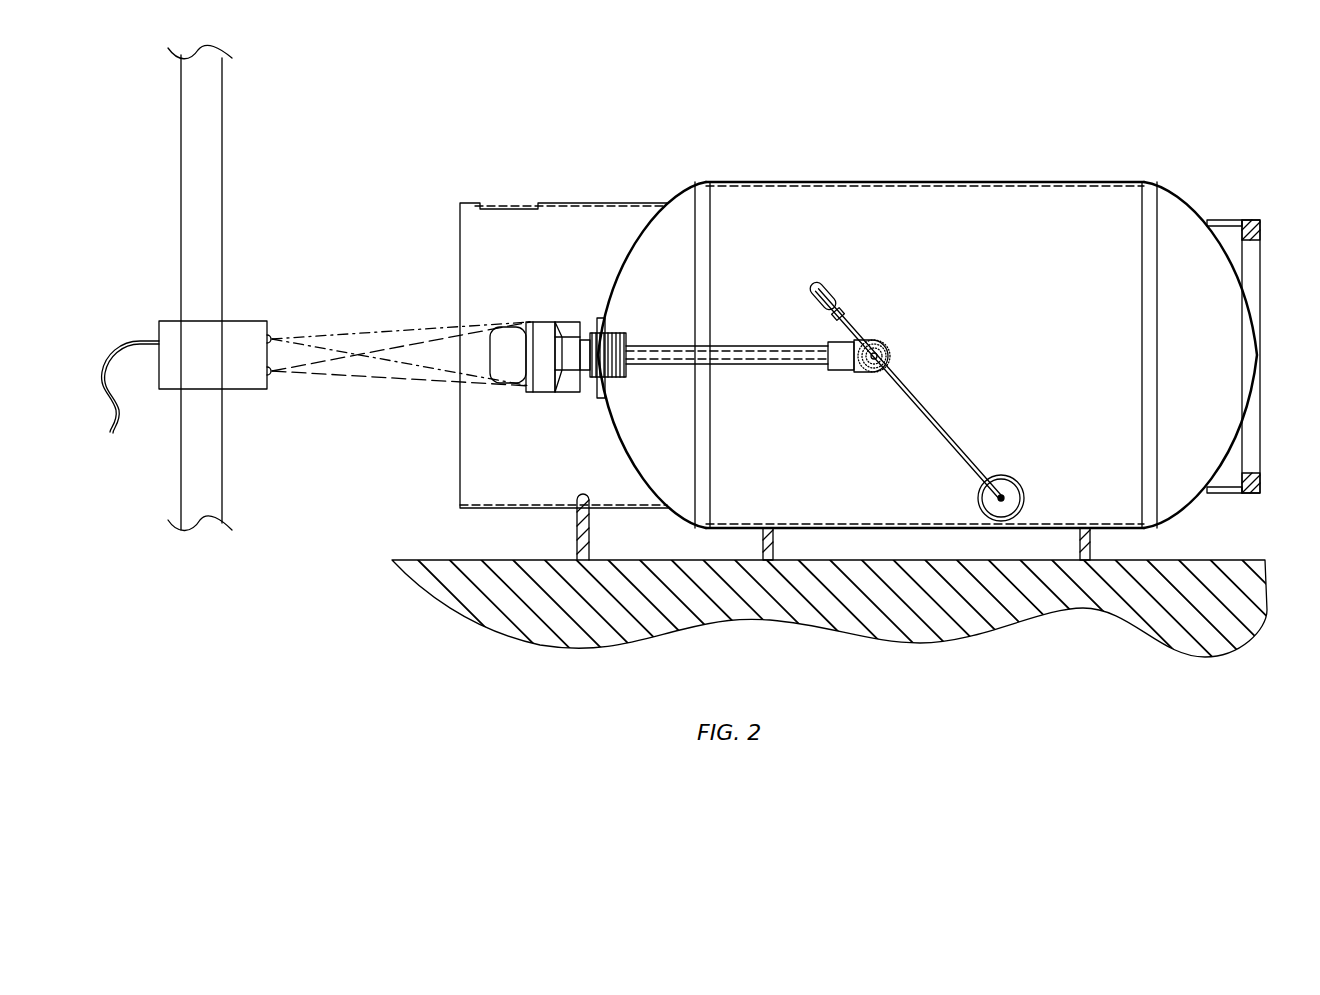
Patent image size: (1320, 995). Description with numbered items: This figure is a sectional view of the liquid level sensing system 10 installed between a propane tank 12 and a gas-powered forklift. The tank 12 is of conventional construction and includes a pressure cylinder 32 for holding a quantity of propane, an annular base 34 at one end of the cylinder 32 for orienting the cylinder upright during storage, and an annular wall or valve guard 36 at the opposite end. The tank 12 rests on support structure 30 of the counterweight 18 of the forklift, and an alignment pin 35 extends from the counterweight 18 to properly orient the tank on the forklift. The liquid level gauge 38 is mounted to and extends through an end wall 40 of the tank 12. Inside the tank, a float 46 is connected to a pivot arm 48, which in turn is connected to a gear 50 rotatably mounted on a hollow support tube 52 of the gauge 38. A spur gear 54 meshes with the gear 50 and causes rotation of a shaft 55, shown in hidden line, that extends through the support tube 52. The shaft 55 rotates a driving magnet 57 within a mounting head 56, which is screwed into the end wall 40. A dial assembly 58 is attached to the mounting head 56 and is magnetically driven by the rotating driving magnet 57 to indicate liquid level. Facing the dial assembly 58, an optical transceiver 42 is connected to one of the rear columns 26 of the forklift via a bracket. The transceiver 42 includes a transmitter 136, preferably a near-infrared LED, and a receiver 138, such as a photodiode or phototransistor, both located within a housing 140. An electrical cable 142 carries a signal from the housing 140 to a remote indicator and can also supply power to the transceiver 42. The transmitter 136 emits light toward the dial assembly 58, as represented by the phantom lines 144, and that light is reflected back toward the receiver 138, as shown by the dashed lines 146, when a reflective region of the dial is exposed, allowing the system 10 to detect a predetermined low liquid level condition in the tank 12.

The system 10 is at (360, 230).
The tank 12 is at (927, 328).
The counterweight 18 is at (415, 578).
The rear upright members or columns 26 is at (186, 172).
The support structure 30 is at (775, 545).
The pressure cylinder 32 is at (1048, 180).
The annular base 34 is at (1255, 258).
The alignment pin 35 is at (577, 543).
The valve guard 36 is at (565, 215).
The liquid level gauge 38 is at (779, 346).
The end wall 40 is at (645, 222).
The optical transceiver 42 is at (204, 320).
The float 46 is at (1017, 481).
The pivot arm 48 is at (937, 425).
The gear 50 is at (886, 342).
The hollow support tube 52 is at (727, 385).
The spur gear 54 is at (866, 372).
The shaft 55 is at (668, 366).
The mounting head 56 is at (570, 325).
The driving magnet 57 is at (622, 340).
The dial assembly 58 is at (538, 325).
The transmitter 136 is at (275, 335).
The receiver 138 is at (272, 378).
The housing 140 is at (200, 332).
The electrical cable 142 is at (104, 362).
The phantom lines 144 is at (395, 328).
The dashed lines 146 is at (395, 400).